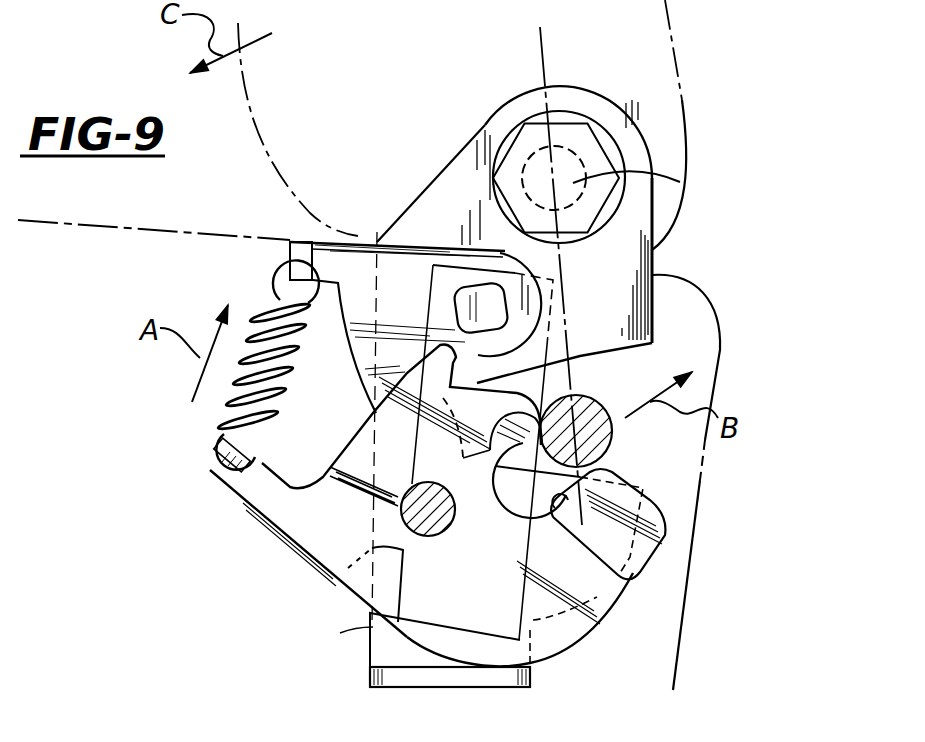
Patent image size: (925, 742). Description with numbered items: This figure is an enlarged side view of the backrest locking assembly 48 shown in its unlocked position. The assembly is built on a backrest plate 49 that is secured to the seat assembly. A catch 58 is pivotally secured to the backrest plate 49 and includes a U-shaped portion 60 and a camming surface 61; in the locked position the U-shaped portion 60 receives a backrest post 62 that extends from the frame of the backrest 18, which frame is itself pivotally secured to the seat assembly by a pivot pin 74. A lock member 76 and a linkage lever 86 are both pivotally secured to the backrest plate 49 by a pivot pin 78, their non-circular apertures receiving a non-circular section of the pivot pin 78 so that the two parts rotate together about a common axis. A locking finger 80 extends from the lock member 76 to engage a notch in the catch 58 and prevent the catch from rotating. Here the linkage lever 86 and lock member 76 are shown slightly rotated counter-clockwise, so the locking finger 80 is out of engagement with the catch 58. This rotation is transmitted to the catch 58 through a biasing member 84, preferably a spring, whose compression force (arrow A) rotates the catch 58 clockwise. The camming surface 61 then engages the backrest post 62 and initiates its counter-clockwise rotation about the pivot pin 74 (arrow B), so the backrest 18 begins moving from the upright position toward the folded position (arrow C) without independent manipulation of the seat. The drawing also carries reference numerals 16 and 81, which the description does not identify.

The door panel 16 is at (718, 376).
The backrest 18 is at (686, 148).
The backrest locking assembly 48 is at (683, 268).
The backrest plate 49 is at (370, 625).
The catch 58 is at (250, 505).
The U-shaped portion 60 is at (633, 578).
The camming surface 61 is at (463, 459).
The backrest post 62 is at (613, 442).
The pivot pin 74 is at (680, 186).
The lock member 76 is at (355, 247).
The pivot pin 78 is at (460, 292).
The locking finger 80 is at (370, 400).
The catch arm edge 81 is at (385, 432).
The biasing member 84 is at (257, 308).
The linkage lever 86 is at (348, 570).